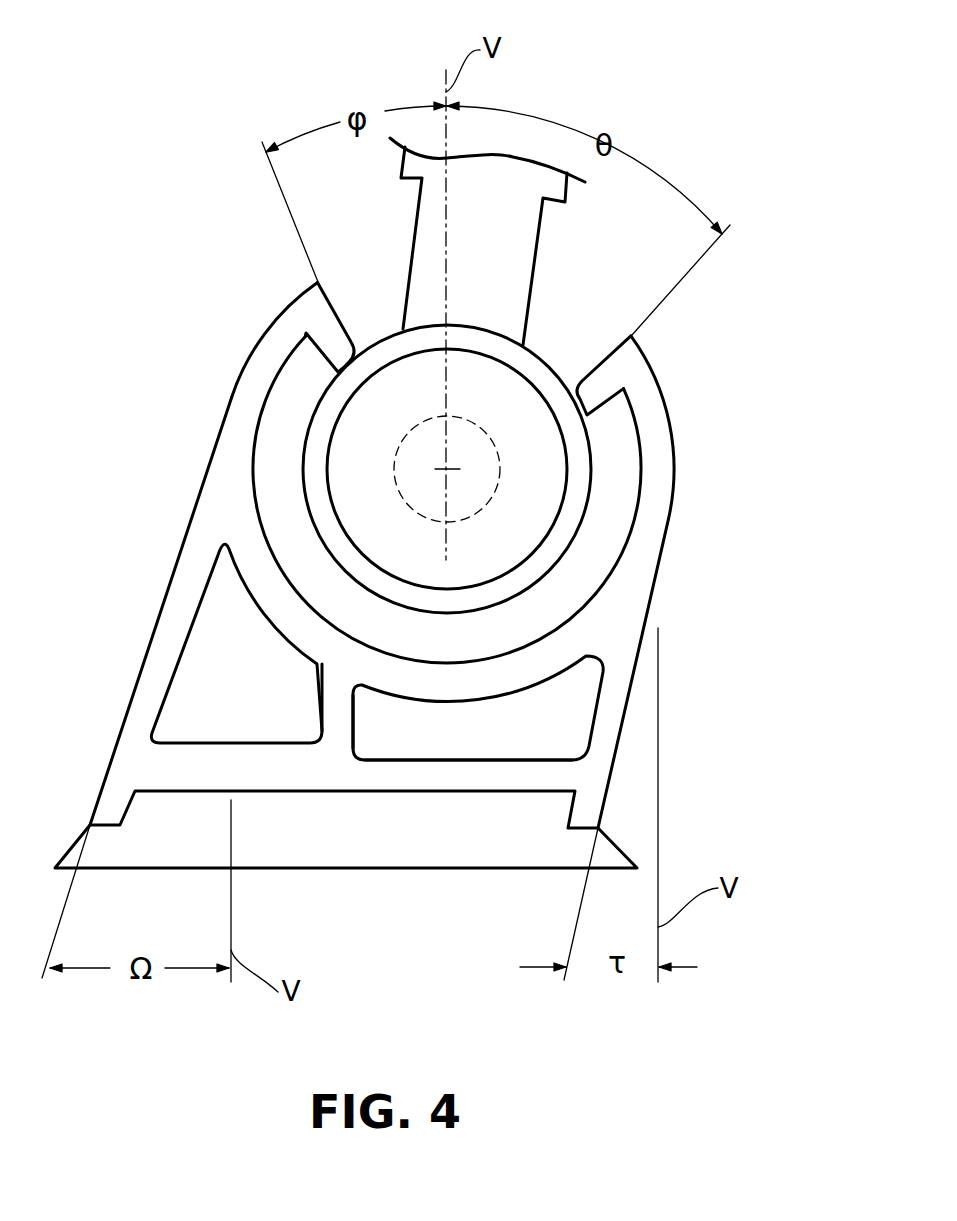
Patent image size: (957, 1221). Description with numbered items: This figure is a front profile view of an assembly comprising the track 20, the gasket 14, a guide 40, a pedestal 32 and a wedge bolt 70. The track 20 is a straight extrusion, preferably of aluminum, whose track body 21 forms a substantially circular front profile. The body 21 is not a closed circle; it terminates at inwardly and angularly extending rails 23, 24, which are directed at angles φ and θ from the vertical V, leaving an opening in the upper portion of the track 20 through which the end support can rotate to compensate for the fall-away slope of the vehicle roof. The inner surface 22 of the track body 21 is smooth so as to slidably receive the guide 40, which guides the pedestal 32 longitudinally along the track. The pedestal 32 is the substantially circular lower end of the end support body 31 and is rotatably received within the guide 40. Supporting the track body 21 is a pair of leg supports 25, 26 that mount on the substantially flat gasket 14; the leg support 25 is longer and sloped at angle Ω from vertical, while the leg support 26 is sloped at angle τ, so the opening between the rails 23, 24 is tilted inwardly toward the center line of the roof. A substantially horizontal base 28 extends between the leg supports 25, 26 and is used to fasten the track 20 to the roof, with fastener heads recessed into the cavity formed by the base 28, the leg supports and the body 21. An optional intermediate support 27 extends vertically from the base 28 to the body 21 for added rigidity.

The gasket 14 is at (537, 848).
The track 20 is at (442, 573).
The track body 21 is at (265, 372).
The inner surface 22 is at (627, 493).
The rail 23 is at (340, 344).
The rail 24 is at (590, 392).
The leg support 25 is at (147, 679).
The leg support 26 is at (610, 707).
The intermediate support 27 is at (337, 718).
The base 28 is at (447, 770).
The body 31 is at (540, 173).
The pedestal 32 is at (570, 525).
The guide 40 is at (620, 445).
The wedge bolt 70 is at (370, 470).